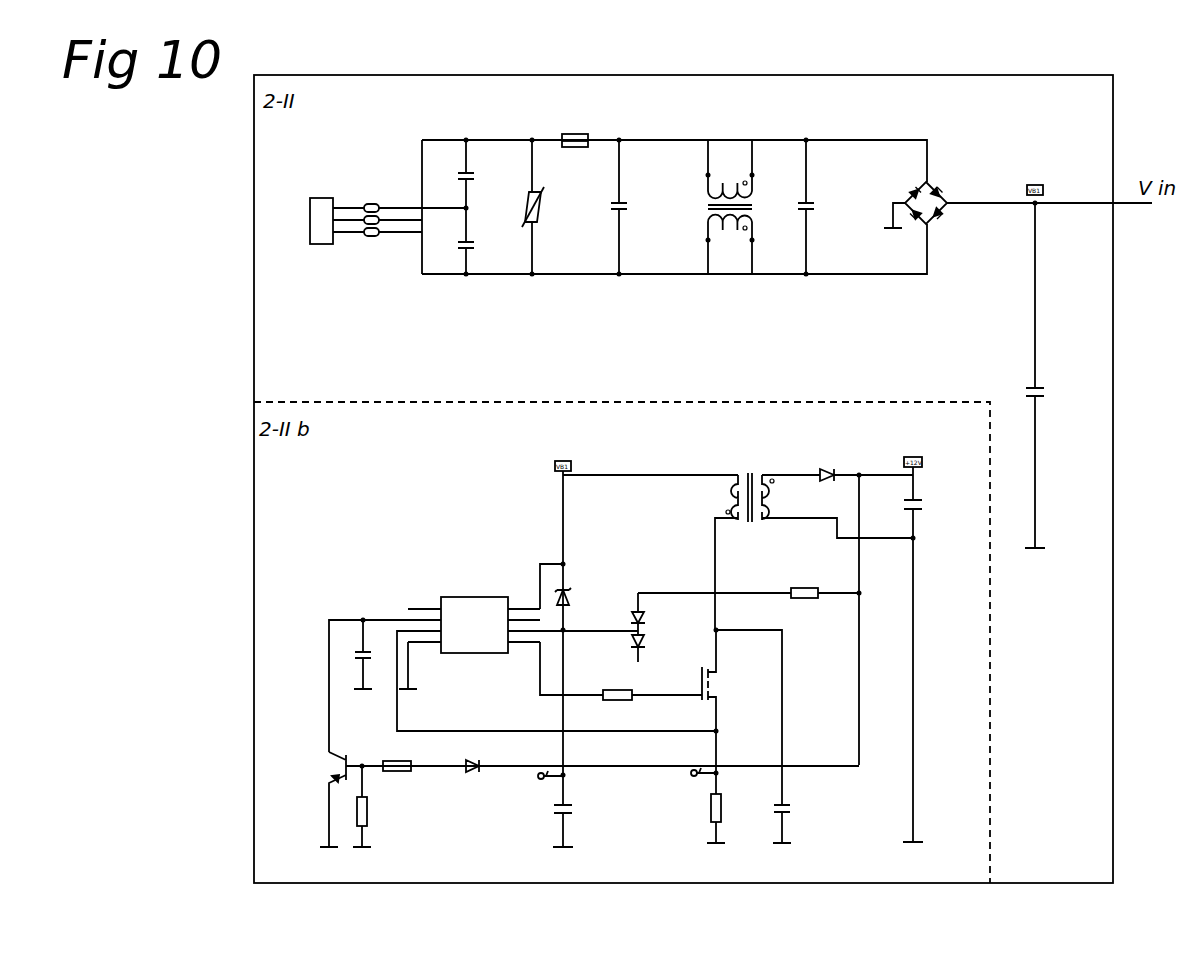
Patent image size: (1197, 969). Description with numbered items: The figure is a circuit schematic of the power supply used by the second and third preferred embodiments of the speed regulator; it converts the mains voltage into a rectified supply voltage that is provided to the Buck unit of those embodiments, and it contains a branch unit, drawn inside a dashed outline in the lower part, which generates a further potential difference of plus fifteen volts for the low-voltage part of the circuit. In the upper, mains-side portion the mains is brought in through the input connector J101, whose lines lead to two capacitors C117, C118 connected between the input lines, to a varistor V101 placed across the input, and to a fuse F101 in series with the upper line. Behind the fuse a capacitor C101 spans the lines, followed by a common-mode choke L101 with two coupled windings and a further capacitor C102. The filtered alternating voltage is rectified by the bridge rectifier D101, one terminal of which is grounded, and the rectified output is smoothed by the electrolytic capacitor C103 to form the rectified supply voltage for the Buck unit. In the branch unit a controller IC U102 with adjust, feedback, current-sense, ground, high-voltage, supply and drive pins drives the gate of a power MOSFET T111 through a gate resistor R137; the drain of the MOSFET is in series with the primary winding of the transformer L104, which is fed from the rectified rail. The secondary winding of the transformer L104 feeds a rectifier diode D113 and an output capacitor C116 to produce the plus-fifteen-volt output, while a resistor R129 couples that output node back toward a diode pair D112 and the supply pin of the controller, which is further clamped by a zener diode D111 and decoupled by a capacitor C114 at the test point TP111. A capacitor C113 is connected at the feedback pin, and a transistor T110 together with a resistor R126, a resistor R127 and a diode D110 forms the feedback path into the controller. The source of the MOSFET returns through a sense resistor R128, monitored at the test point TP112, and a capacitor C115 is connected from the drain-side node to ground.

The AC input connector J101 is at (385, 204).
The capacitor C117 is at (482, 190).
The capacitor C118 is at (482, 258).
The varistor V101 is at (548, 207).
The fuse F101 is at (575, 124).
The capacitor C101 is at (635, 207).
The common mode choke L101 is at (733, 187).
The capacitor C102 is at (822, 207).
The bridge rectifier D101 is at (933, 202).
The bulk capacitor C103 is at (1051, 375).
The transformer L104 is at (814, 535).
The rectifier diode D113 is at (864, 457).
The output capacitor C116 is at (928, 654).
The resistor R129 is at (750, 620).
The diode pair D112 is at (656, 627).
The zener diode D111 is at (580, 597).
The controller IC U102 is at (522, 658).
The capacitor C113 is at (378, 654).
The gate resistor R137 is at (652, 685).
The power MOSFET T111 is at (742, 717).
The transistor T110 is at (318, 799).
The resistor R126 is at (387, 756).
The resistor R127 is at (378, 806).
The diode D110 is at (468, 777).
The test point TP111 is at (546, 783).
The capacitor C114 is at (577, 821).
The test point TP112 is at (699, 781).
The resistor R128 is at (732, 818).
The capacitor C115 is at (797, 823).